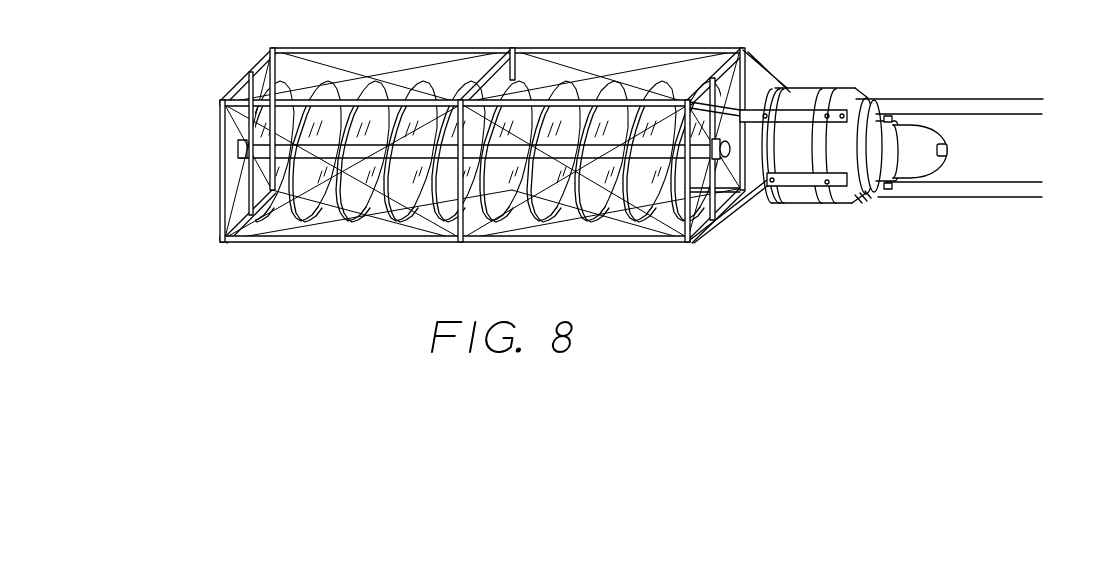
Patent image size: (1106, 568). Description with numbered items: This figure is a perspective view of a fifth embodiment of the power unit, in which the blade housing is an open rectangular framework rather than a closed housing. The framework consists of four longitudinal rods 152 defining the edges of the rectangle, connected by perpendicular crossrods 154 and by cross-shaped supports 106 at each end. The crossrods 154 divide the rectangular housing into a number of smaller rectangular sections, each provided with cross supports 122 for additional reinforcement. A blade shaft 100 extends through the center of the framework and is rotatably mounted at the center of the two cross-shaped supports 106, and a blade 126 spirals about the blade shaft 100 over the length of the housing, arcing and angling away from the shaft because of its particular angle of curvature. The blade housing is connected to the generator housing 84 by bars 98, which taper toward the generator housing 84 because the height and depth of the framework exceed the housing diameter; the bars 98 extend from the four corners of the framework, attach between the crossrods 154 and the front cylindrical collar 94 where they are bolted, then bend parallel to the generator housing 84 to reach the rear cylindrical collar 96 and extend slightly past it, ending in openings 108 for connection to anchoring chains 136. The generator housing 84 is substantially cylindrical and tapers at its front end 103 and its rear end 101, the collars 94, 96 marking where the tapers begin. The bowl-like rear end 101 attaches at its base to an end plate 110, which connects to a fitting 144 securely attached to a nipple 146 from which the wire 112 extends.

The generator housing 84 is at (807, 204).
The front cylindrical collar 94 is at (787, 90).
The rear cylindrical collar 96 is at (848, 88).
The bars 98 is at (792, 88).
The blade shaft 100 is at (407, 156).
The rear end 101 is at (866, 201).
The front end 103 is at (744, 172).
The cross-shaped supports 106 is at (248, 131).
The openings 108 is at (866, 102).
The end plate 110 is at (893, 118).
The wire 112 is at (950, 153).
The cross supports 122 is at (443, 63).
The blade 126 is at (583, 203).
The anchoring chains 136 is at (1012, 99).
The fitting 144 is at (887, 184).
The nipple 146 is at (923, 140).
The longitudinal rods 152 is at (360, 52).
The crossrods 154 is at (518, 76).